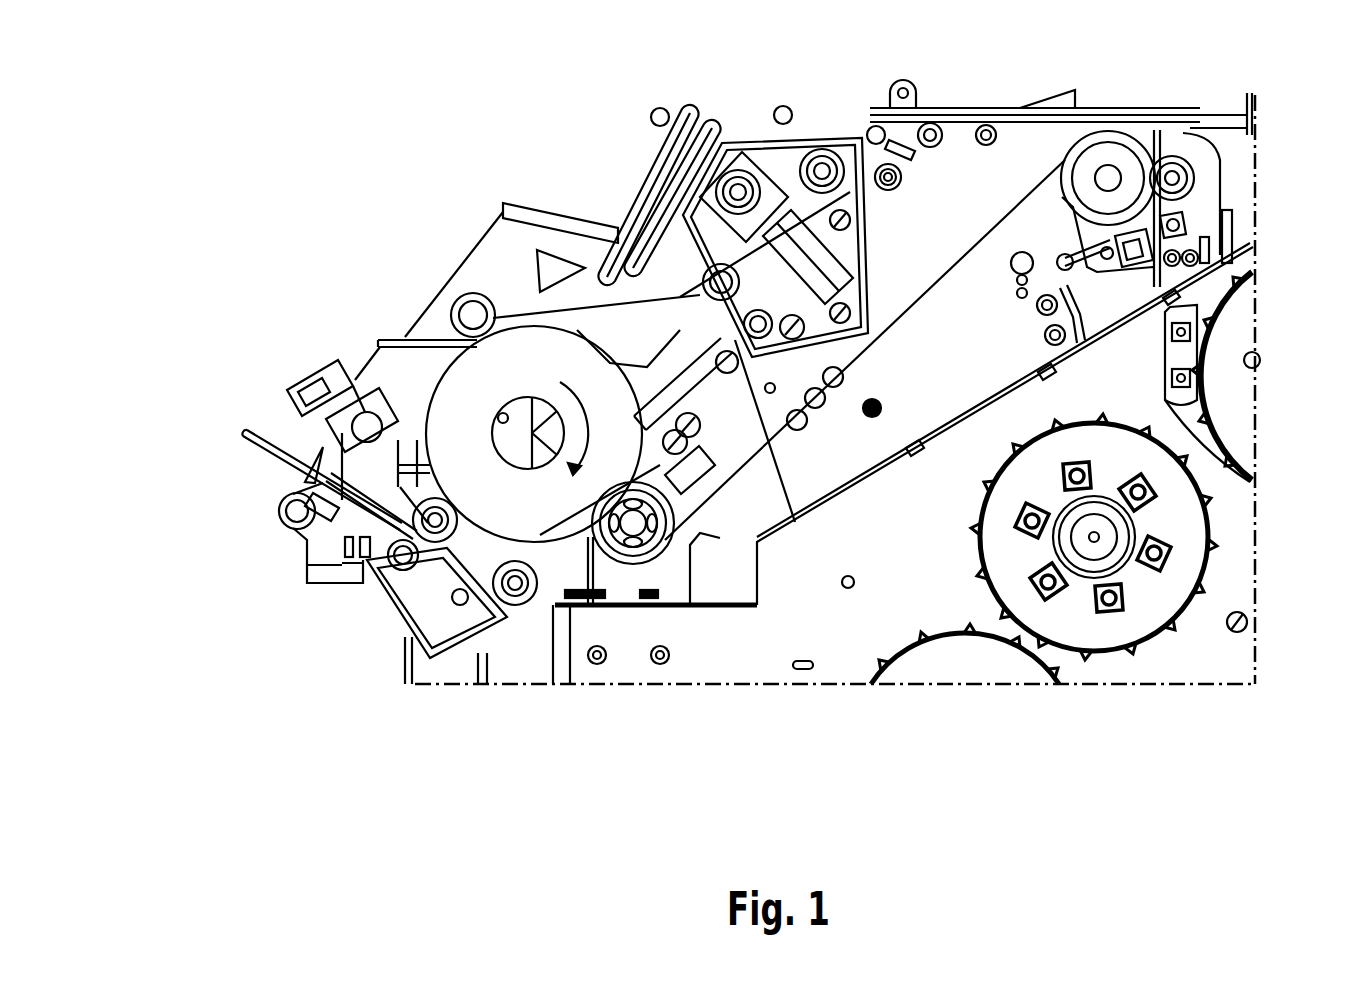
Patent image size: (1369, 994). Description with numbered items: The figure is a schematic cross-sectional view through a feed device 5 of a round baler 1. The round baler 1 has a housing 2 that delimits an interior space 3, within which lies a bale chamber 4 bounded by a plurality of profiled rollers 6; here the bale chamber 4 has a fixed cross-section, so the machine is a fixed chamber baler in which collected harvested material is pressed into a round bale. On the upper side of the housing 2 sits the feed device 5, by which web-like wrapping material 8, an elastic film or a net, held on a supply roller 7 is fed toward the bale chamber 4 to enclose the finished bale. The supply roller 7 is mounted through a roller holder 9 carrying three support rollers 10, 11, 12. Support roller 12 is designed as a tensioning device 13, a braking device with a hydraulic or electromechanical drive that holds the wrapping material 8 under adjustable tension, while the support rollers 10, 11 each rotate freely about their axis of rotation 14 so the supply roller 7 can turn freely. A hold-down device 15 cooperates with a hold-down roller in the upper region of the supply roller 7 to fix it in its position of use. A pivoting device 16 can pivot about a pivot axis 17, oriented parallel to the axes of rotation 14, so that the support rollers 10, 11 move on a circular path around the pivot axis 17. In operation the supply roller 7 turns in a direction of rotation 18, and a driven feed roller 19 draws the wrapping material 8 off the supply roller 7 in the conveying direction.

The round baler 1 is at (150, 283).
The housing 2 is at (400, 320).
The interior space 3 is at (830, 625).
The bale chamber 4 is at (1215, 655).
The feed device 5 is at (310, 190).
The profiled rollers 6 is at (1232, 393).
The supply roller 7 is at (545, 515).
The wrapping material 8 is at (960, 250).
The roller holder 9 is at (420, 272).
The support roller 10 is at (363, 588).
The support roller 11 is at (510, 605).
The support roller 12 is at (645, 550).
The tensioning device 13 is at (709, 642).
The axis of rotation 14 is at (512, 560).
The hold-down device 15 is at (552, 185).
The pivoting device 16 is at (320, 352).
The pivot axis 17 is at (407, 645).
The direction of rotation 18 is at (602, 400).
The feed roller 19 is at (1122, 165).